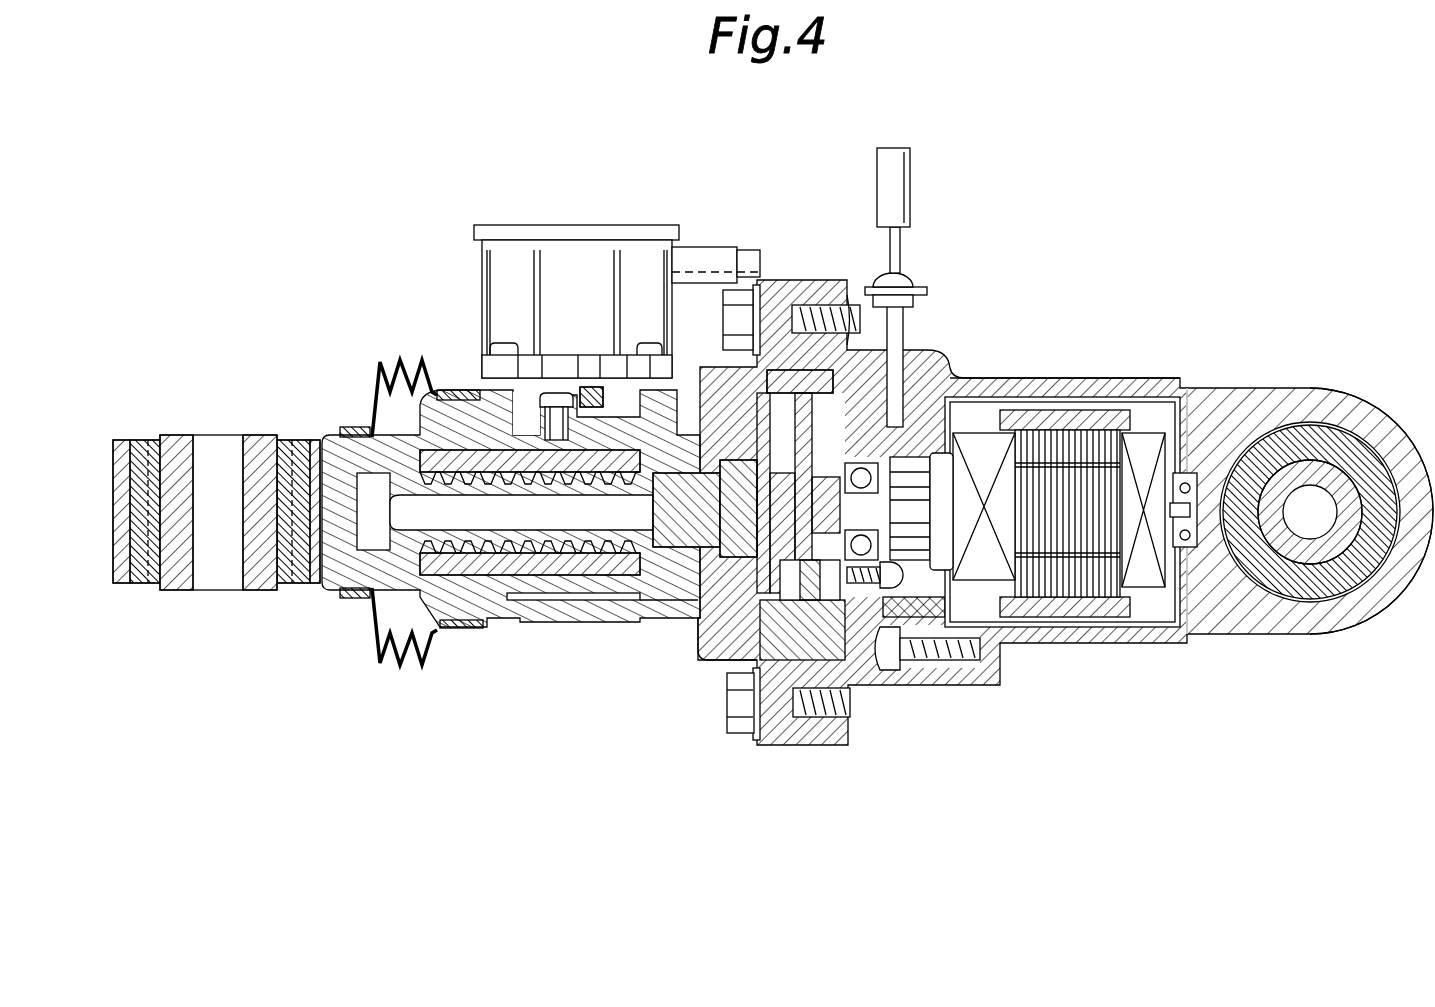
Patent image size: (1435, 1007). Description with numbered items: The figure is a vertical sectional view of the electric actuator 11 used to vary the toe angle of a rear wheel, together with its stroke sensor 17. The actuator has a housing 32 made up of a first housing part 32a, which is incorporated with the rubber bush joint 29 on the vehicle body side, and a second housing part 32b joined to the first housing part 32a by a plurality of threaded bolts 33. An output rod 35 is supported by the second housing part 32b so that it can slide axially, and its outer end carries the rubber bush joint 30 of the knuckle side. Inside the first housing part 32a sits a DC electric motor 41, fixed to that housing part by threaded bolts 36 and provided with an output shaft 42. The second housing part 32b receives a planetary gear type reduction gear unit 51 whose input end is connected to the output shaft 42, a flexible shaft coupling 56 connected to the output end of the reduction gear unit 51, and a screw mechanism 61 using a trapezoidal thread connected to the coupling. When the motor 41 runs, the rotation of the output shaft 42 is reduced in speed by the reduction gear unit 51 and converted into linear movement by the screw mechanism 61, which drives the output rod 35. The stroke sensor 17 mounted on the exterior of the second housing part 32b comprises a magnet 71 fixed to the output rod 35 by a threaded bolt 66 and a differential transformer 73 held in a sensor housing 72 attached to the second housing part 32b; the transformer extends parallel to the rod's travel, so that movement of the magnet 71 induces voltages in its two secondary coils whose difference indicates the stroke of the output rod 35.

The electric actuator 11 is at (1200, 248).
The stroke sensor 17 is at (587, 260).
The rubber bush joint 29 is at (1384, 417).
The rubber bush joint 30 is at (170, 440).
The housing 32 is at (793, 760).
The first housing part 32a is at (1173, 380).
The second housing part 32b is at (500, 628).
The threaded bolts 33 is at (728, 312).
The output rod 35 is at (376, 638).
The threaded bolts 36 is at (970, 688).
The DC electric motor 41 is at (1122, 387).
The output shaft 42 is at (885, 382).
The planetary gear type reduction gear unit 51 is at (852, 664).
The flexible shaft coupling 56 is at (694, 656).
The screw mechanism 61 is at (566, 608).
The threaded bolt 66 is at (546, 396).
The magnet 71 is at (605, 405).
The sensor housing 72 is at (482, 267).
The differential transformer 73 is at (558, 352).